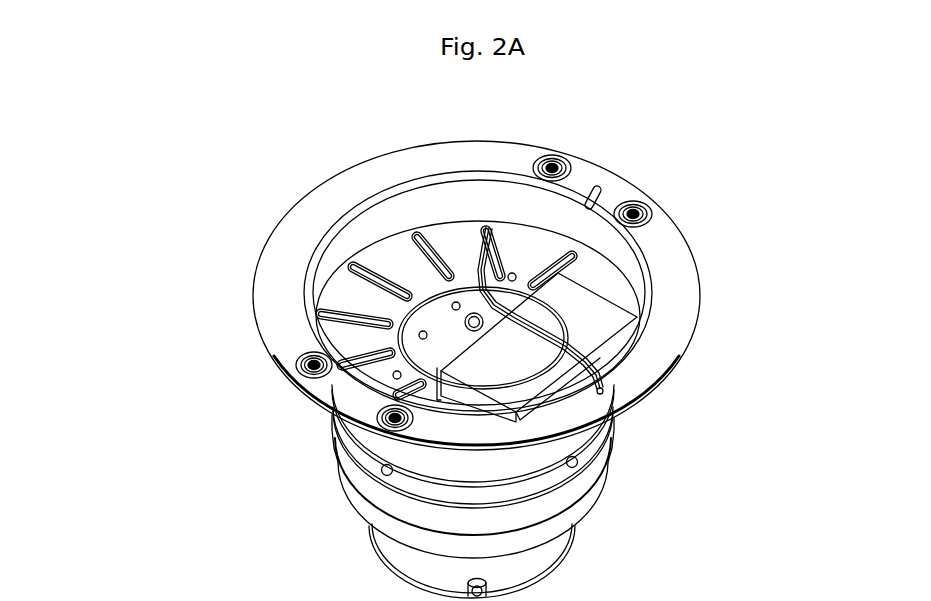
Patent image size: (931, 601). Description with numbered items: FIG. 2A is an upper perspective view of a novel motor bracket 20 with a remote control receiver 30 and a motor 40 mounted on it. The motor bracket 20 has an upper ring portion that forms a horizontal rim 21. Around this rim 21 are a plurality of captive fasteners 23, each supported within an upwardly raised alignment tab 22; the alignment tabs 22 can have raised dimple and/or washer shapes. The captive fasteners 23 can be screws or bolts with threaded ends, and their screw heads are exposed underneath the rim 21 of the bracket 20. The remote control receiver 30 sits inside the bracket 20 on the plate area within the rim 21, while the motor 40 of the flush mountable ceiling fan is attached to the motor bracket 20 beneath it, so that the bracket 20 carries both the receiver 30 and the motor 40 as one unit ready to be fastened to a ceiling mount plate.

The motor bracket 20 is at (170, 119).
The horizontal rim 21 is at (503, 152).
The alignment tabs 22 is at (568, 173).
The captive fasteners 23 is at (558, 157).
The remote control receiver 30 is at (600, 328).
The motor 40 is at (583, 507).